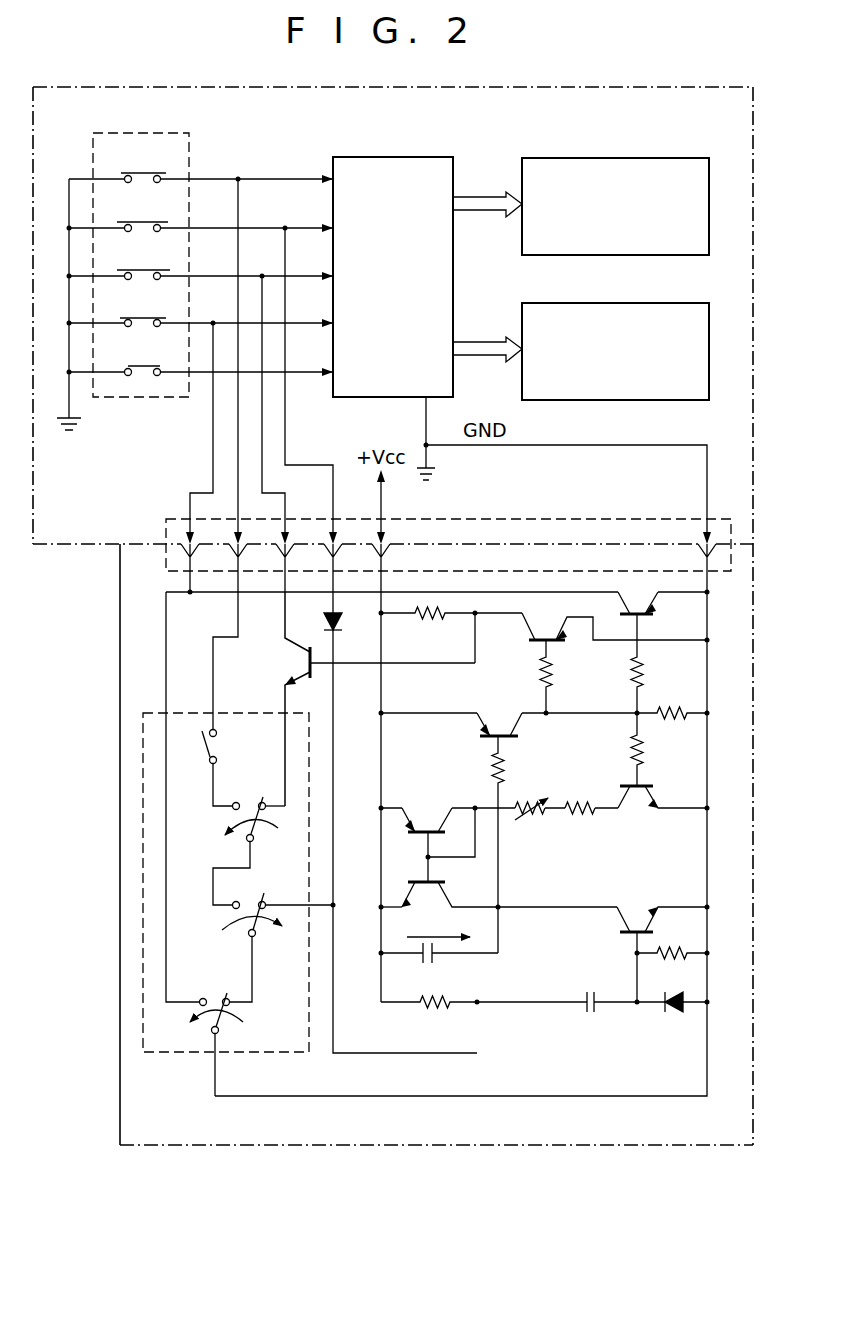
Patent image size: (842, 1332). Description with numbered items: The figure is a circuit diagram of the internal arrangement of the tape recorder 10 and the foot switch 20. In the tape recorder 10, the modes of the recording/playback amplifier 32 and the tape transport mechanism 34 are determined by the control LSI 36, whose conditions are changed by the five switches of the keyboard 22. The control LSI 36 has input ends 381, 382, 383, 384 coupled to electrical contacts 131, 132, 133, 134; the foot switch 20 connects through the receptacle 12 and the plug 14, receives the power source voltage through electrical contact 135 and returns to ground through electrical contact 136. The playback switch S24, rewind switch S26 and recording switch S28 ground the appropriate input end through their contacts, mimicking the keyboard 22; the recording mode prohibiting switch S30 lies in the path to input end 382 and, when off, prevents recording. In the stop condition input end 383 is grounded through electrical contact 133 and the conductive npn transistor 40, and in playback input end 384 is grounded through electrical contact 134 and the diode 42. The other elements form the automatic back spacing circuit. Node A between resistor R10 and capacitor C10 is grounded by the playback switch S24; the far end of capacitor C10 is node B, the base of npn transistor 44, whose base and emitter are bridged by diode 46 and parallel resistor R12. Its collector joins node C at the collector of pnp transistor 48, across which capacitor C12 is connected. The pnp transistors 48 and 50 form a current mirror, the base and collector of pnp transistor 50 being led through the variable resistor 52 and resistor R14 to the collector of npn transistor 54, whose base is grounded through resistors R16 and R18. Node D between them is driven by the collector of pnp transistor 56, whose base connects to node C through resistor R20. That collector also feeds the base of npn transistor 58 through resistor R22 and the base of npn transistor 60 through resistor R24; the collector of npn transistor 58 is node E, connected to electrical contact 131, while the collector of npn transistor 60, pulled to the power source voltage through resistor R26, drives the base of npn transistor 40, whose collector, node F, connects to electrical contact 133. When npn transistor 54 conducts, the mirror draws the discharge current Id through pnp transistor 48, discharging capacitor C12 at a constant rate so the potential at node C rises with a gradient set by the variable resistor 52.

The tape recorder 10 is at (695, 87).
The foot switch 20 is at (117, 642).
The keyboard 22 is at (132, 400).
The recording/playback amplifier 32 is at (606, 158).
The tape transport mechanism 34 is at (586, 305).
The control LSI 36 is at (405, 157).
The input end 381 is at (213, 323).
The input end 382 is at (238, 179).
The input end 383 is at (262, 276).
The input end 384 is at (285, 228).
The receptacle 12 is at (465, 530).
The plug 14 is at (178, 556).
The electrical contact 131 is at (188, 538).
The electrical contact 132 is at (236, 538).
The electrical contact 133 is at (285, 538).
The electrical contact 134 is at (333, 538).
The electrical contact 135 is at (381, 538).
The electrical contact 136 is at (705, 538).
The npn transistor 40 is at (306, 666).
The diode 42 is at (338, 628).
The npn transistor 44 is at (616, 936).
The diode 46 is at (674, 1012).
The pnp transistor 48 is at (430, 890).
The pnp transistor 50 is at (428, 826).
The variable resistor 52 is at (528, 818).
The npn transistor 54 is at (640, 800).
The pnp transistor 56 is at (482, 736).
The npn transistor 58 is at (655, 610).
The npn transistor 60 is at (528, 641).
The resistor R10 is at (430, 1010).
The resistor R12 is at (674, 950).
The resistor R14 is at (580, 816).
The resistor R16 is at (630, 750).
The resistor R18 is at (675, 720).
The resistor R20 is at (505, 768).
The resistor R22 is at (645, 675).
The resistor R24 is at (553, 675).
The resistor R26 is at (420, 620).
The capacitor C10 is at (598, 1010).
The capacitor C12 is at (434, 964).
The playback switch S24 is at (240, 926).
The rewind switch S26 is at (204, 1035).
The recording switch S28 is at (262, 838).
The recording mode prohibiting switch S30 is at (216, 754).
The node A is at (480, 1008).
The node B is at (638, 1008).
The node C is at (501, 909).
The node D is at (634, 714).
The node E is at (505, 616).
The node F is at (284, 631).
The discharge current Id is at (441, 923).